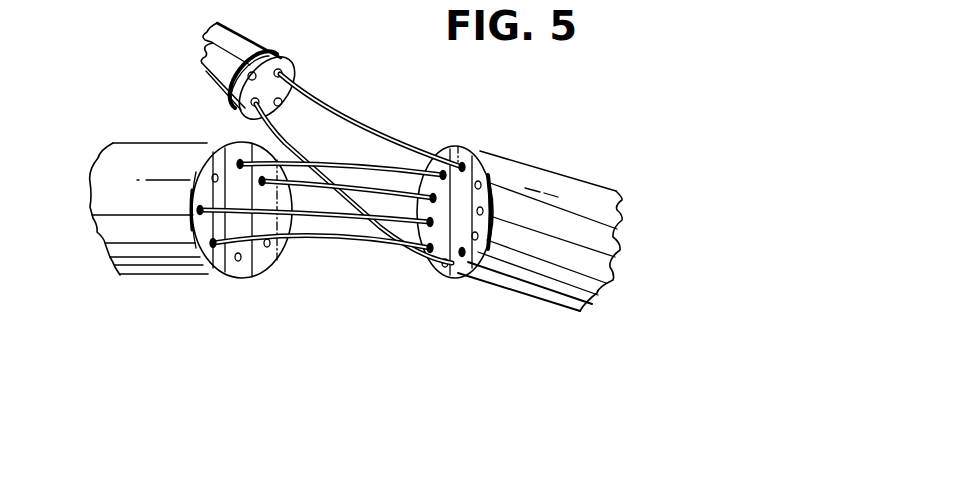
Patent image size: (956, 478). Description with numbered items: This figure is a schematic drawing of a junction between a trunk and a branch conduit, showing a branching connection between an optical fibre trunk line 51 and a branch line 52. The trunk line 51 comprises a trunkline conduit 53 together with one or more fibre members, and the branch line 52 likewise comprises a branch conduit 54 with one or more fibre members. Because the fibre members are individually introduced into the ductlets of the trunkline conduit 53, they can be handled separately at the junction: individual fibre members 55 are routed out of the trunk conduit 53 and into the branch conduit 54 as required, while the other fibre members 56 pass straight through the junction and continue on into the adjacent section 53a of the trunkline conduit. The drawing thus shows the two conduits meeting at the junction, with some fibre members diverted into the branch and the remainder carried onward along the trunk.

The optical fibre trunk line 51 is at (130, 143).
The branch line 52 is at (255, 71).
The trunkline conduit 53 is at (565, 205).
The adjacent section of the trunkline conduit 53a is at (138, 235).
The branch conduit 54 is at (217, 43).
The fibre members 55 is at (329, 114).
The fibre members 56 is at (310, 215).